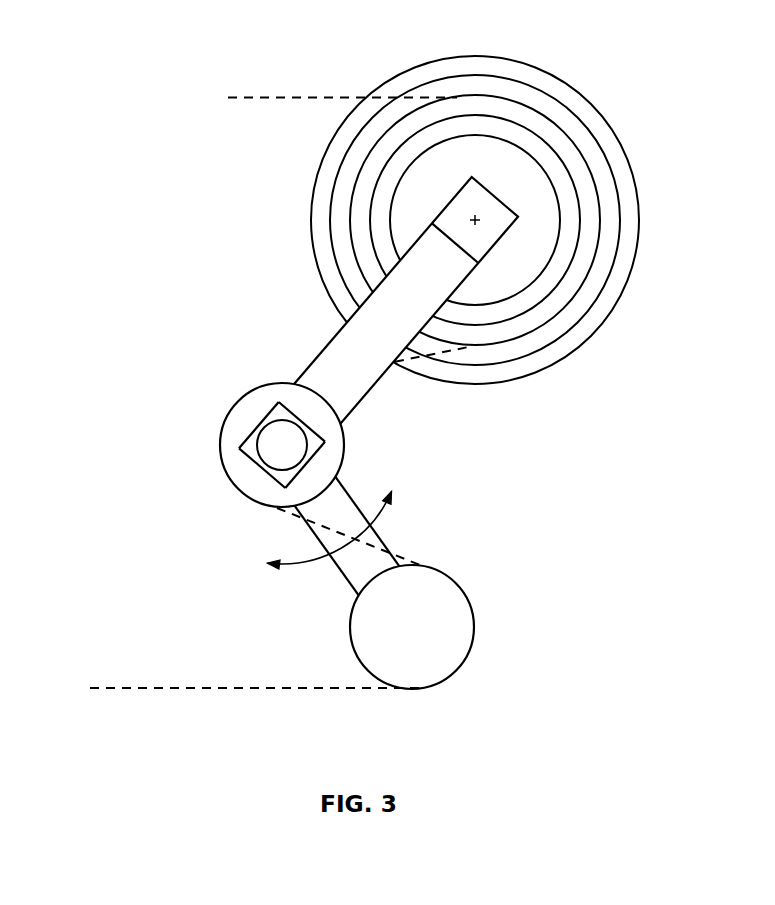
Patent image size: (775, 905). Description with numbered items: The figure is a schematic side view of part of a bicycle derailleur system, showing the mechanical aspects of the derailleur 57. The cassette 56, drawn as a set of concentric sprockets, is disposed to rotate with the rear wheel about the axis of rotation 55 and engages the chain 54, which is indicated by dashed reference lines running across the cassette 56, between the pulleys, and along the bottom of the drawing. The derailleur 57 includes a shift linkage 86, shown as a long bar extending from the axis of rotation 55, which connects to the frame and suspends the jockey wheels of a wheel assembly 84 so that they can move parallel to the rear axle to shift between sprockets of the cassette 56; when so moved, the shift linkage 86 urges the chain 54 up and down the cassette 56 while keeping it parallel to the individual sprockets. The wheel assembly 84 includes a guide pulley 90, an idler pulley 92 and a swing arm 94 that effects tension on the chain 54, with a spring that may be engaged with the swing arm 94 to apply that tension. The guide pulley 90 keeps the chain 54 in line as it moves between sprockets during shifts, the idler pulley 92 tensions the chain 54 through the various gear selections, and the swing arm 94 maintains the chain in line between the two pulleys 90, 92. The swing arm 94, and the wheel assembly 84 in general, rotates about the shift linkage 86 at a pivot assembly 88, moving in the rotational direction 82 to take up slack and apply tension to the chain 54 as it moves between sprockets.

The chain 54 is at (288, 97).
The axis of rotation 55 is at (473, 200).
The cassette 56 is at (638, 220).
The derailleur 57 is at (370, 408).
The rotational direction 82 is at (300, 563).
The wheel assembly 84 is at (395, 525).
The shift linkage 86 is at (308, 337).
The pivot assembly 88 is at (268, 437).
The guide pulley 90 is at (238, 493).
The idler pulley 92 is at (475, 628).
The swing arm 94 is at (350, 587).